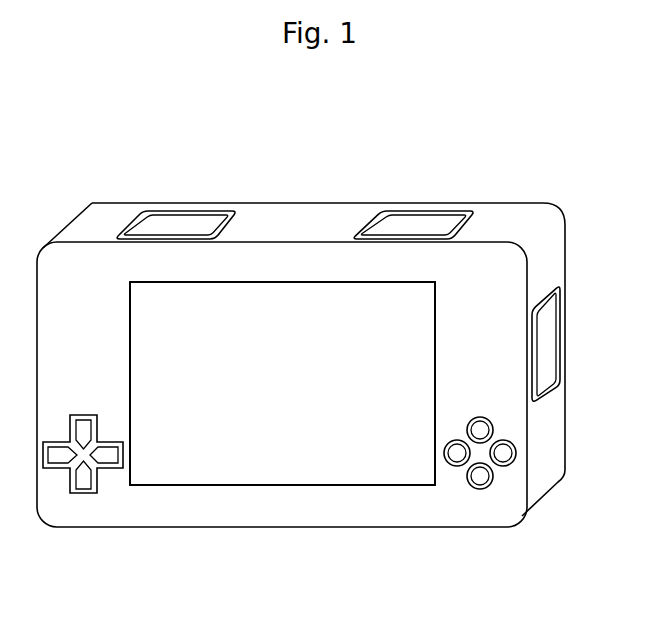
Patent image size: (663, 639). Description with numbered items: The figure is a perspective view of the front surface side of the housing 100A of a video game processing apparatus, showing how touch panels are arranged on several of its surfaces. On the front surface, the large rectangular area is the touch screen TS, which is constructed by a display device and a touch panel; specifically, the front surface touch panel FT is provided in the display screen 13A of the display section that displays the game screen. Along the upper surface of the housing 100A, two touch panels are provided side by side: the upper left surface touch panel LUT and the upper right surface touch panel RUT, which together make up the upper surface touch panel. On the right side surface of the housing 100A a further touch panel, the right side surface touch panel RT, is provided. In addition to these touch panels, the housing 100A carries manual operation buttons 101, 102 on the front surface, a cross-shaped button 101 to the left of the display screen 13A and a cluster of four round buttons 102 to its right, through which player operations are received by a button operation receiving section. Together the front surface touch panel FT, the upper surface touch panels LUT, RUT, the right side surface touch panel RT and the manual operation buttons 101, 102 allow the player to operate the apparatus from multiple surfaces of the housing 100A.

The housing 100A is at (390, 157).
The upper left surface touch panel LUT is at (153, 212).
The upper right surface touch panel RUT is at (393, 211).
The right side surface touch panel RT is at (547, 377).
The touch screen TS is at (233, 465).
The display screen 13A is at (282, 437).
The front surface touch panel FT is at (312, 449).
The manual operation button 101 is at (70, 486).
The manual operation buttons 102 is at (483, 488).